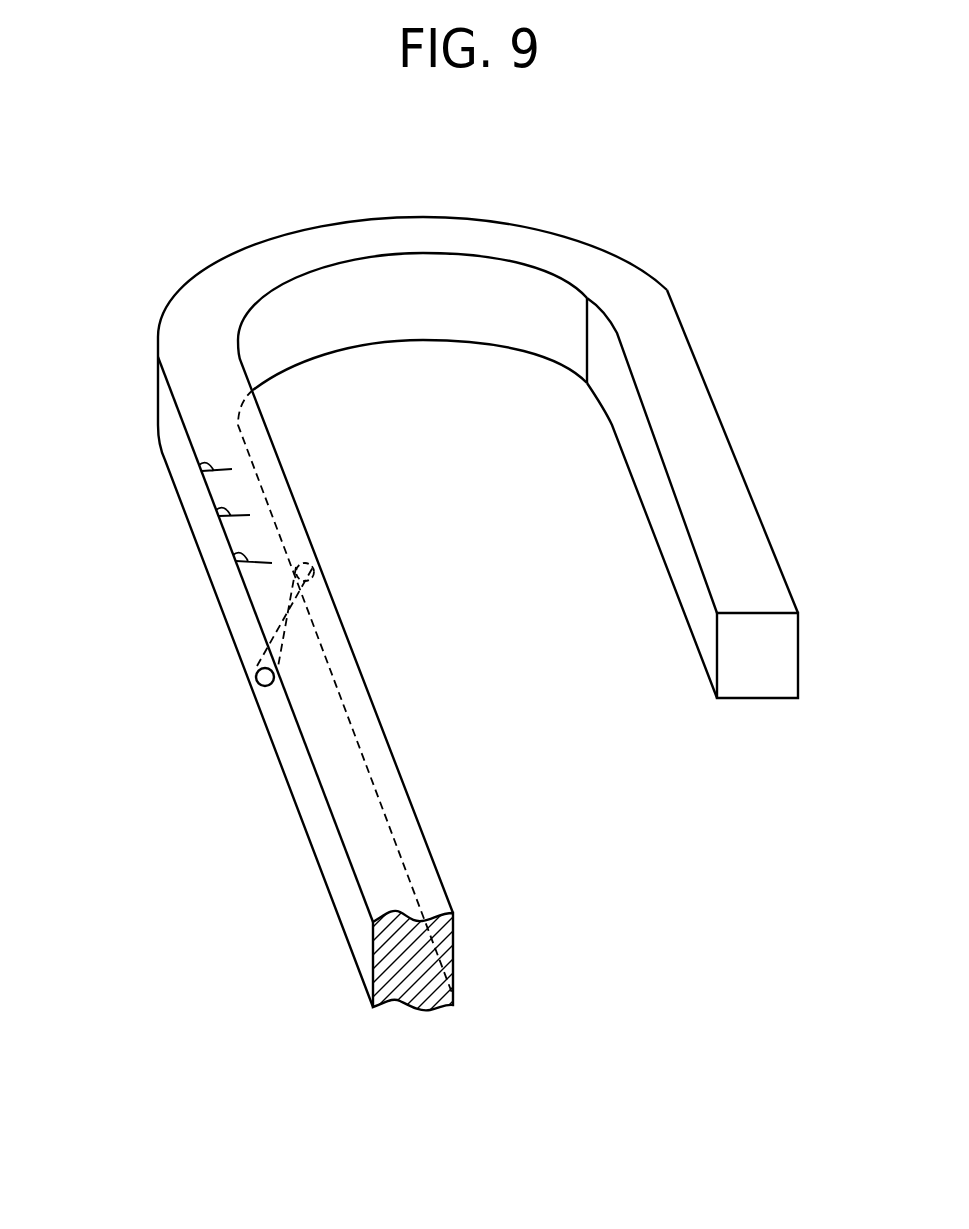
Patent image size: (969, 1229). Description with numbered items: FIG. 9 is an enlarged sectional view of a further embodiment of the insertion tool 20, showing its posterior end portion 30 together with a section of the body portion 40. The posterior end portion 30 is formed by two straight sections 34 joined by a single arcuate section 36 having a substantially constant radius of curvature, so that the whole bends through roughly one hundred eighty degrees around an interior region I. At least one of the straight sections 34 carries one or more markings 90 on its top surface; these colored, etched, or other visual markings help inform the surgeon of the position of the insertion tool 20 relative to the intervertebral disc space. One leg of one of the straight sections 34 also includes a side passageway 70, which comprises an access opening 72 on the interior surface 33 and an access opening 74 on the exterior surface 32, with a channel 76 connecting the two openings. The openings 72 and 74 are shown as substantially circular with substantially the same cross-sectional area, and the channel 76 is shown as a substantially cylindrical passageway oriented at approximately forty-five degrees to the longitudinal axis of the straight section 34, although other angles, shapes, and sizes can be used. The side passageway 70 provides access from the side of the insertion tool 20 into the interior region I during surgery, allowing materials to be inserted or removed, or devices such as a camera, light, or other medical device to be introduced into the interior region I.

The insertion tool 20 is at (545, 720).
The posterior end portion 30 is at (722, 357).
The exterior surface 32 is at (303, 780).
The inner surface 33 is at (357, 743).
The straight sections 34 is at (277, 490).
The arcuate section 36 is at (412, 228).
The body portion 40 is at (245, 937).
The side passageway 70 is at (308, 598).
The access opening 72 is at (320, 565).
The access opening 74 is at (255, 676).
The channel 76 is at (288, 625).
The markings 90 is at (233, 555).
The interior region I is at (488, 527).